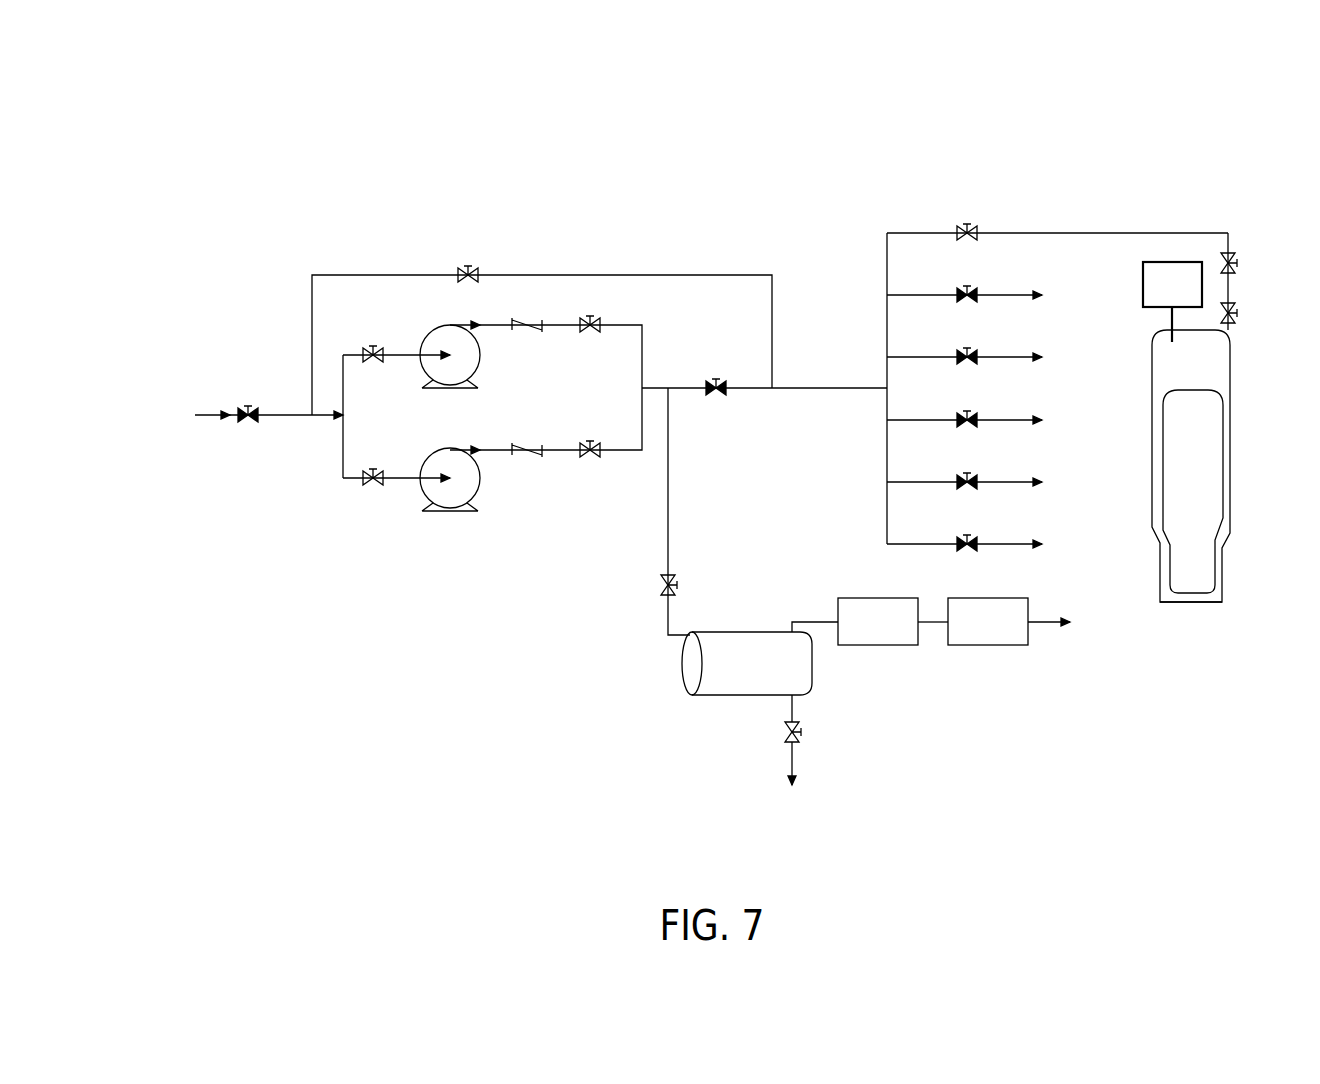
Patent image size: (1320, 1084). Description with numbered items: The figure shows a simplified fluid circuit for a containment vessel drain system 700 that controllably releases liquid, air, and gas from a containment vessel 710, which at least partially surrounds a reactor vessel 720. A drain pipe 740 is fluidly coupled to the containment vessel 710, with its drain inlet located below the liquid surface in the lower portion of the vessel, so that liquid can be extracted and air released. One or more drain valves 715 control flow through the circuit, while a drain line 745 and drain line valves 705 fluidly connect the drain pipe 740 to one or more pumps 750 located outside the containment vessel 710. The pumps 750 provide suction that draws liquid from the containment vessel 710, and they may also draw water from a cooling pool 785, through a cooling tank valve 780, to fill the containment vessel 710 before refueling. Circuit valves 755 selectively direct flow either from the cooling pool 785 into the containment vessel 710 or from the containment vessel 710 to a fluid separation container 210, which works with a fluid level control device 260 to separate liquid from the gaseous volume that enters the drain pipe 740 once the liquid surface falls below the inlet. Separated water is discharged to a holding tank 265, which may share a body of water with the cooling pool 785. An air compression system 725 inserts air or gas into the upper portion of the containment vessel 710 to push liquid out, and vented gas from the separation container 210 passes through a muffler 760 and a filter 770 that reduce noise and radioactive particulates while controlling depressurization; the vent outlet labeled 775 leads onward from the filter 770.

The containment vessel drain system 700 is at (1197, 172).
The cooling pool 785 is at (197, 414).
The cooling tank valve 780 is at (249, 422).
The pumps 750 is at (478, 483).
The circuit valves 755 is at (716, 392).
The drain line valves 705 is at (950, 228).
The drain line 745 is at (1120, 232).
The drain valves 715 is at (1232, 300).
The air compression system 725 is at (1172, 302).
The drain pipe 740 is at (1230, 372).
The reactor vessel 720 is at (1193, 491).
The containment vessel 710 is at (1168, 608).
The fluid separation container 210 is at (752, 630).
The fluid level control device 260 is at (785, 733).
The holding tank 265 is at (800, 767).
The muffler 760 is at (873, 648).
The filter 770 is at (985, 648).
The vent line to RBV 775 is at (1040, 625).